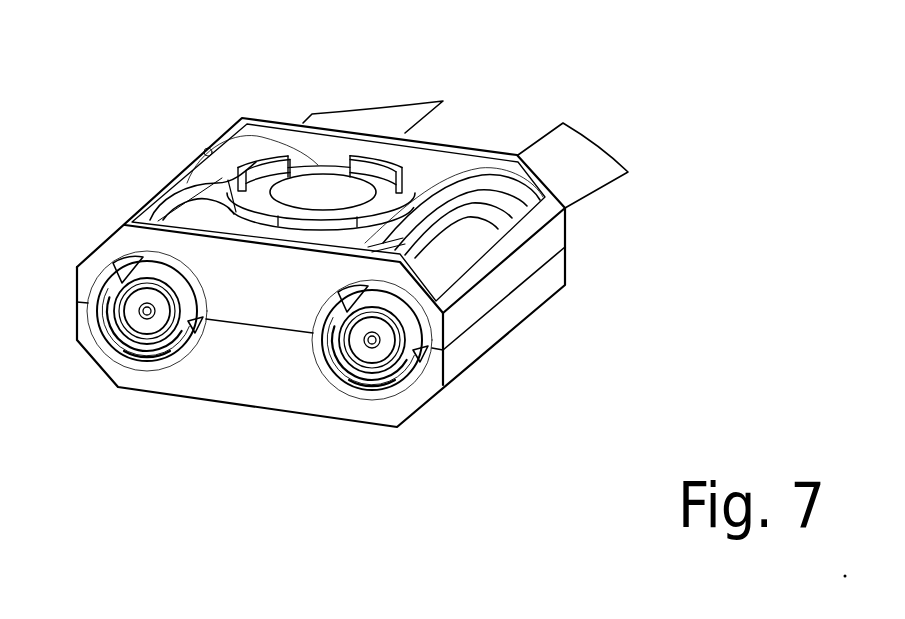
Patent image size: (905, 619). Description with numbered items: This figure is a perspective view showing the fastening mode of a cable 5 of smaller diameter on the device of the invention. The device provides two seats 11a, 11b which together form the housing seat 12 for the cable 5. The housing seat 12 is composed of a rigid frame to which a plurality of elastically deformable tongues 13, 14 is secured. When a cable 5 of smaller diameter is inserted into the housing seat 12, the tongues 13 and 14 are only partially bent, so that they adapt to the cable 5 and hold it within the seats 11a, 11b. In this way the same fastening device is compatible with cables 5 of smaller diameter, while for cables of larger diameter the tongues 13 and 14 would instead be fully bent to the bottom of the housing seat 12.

The seat 11a is at (430, 162).
The seat 11b is at (413, 410).
The cable 5 is at (160, 320).
The housing seat 12 is at (396, 311).
The elastically deformable tongue 13 is at (388, 378).
The elastically deformable tongue 14 is at (429, 347).